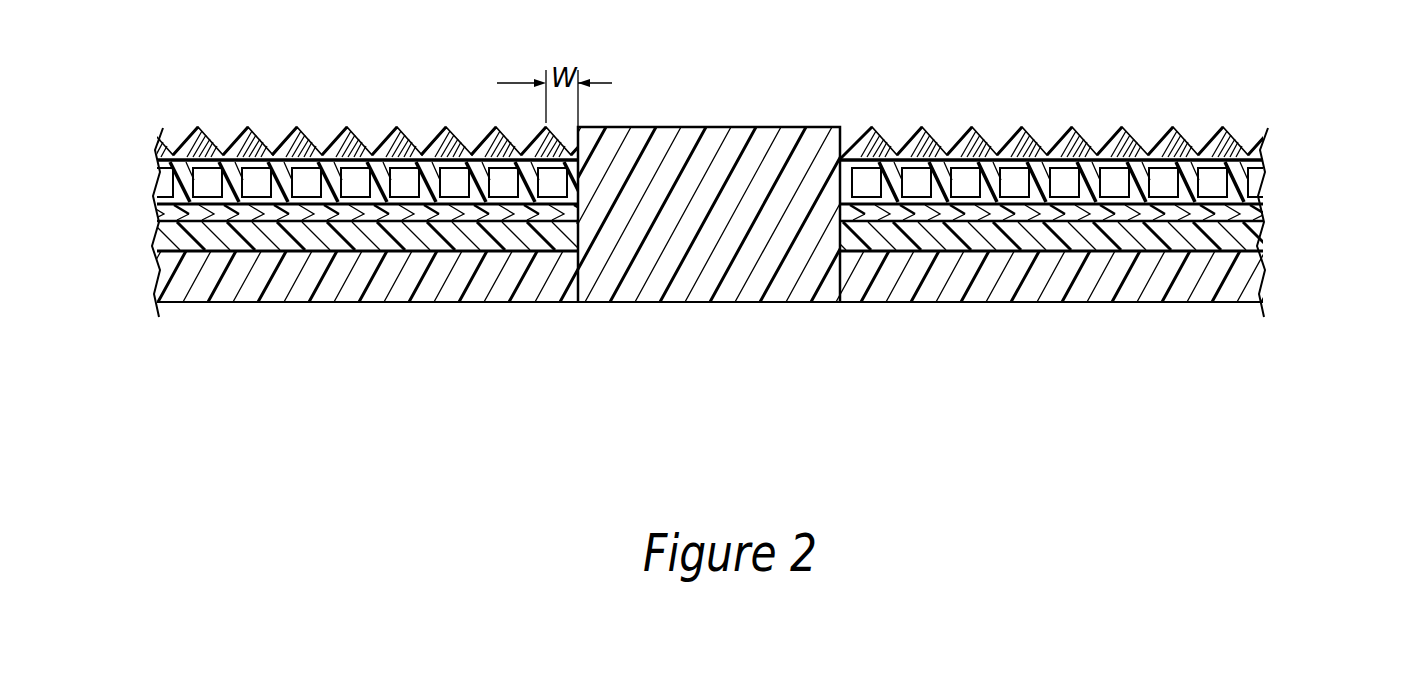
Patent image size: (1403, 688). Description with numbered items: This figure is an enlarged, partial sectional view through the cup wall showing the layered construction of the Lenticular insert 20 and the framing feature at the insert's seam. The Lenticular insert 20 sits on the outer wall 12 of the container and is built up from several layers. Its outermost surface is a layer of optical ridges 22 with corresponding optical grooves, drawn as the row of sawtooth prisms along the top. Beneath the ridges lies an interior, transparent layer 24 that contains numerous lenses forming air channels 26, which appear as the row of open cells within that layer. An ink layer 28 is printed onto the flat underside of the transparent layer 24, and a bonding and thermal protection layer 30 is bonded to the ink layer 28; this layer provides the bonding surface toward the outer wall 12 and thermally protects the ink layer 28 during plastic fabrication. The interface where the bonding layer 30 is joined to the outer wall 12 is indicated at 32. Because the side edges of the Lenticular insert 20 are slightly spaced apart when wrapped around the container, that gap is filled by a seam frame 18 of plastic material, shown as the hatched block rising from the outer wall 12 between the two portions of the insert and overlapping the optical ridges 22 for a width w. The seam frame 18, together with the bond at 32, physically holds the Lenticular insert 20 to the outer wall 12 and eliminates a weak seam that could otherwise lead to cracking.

The outer wall 12 is at (223, 302).
The seam frame 18 is at (827, 127).
The Lenticular insert 20 is at (145, 137).
The optical ridges 22 is at (1205, 148).
The transparent layer 24 is at (1263, 167).
The air channels 26 is at (1070, 137).
The ink layer 28 is at (1263, 213).
The bonding and thermal protection layer 30 is at (1263, 230).
The bonding location 32 is at (1263, 250).